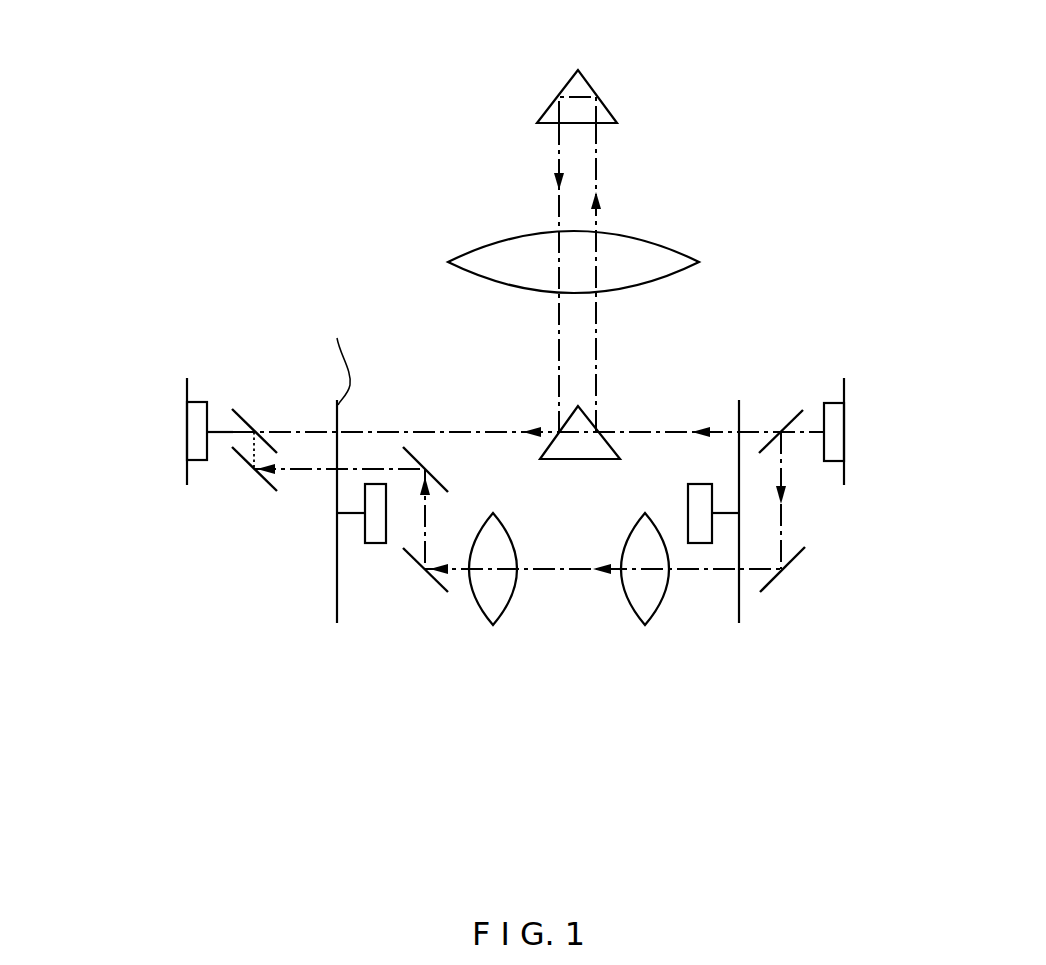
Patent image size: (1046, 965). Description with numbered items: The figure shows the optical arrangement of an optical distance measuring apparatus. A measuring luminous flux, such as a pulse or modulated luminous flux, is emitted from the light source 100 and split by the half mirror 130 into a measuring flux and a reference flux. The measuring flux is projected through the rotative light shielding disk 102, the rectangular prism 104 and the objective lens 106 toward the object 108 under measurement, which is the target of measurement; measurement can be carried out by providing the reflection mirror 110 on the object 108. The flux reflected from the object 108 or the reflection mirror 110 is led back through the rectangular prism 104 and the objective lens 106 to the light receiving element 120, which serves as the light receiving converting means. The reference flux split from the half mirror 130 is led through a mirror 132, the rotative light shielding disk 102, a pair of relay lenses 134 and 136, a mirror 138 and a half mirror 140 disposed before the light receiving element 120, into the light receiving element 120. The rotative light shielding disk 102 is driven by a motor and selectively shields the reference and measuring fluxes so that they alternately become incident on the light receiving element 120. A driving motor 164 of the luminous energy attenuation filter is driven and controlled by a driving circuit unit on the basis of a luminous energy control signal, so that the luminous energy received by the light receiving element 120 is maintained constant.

The light source 100 is at (835, 453).
The rotative light shielding disk 102 is at (742, 623).
The rectangular prism 104 is at (572, 452).
The objective lens 106 is at (650, 241).
The object under measurement 108 is at (588, 82).
The reflection mirror 110 is at (646, 69).
The light receiving element 120 is at (188, 435).
The half mirror 130 is at (797, 415).
The mirror 132 is at (800, 560).
The relay lens 134 is at (653, 608).
The relay lens 136 is at (503, 617).
The mirror 138 is at (240, 455).
The half mirror 140 is at (242, 408).
The driving motor 164 is at (363, 528).